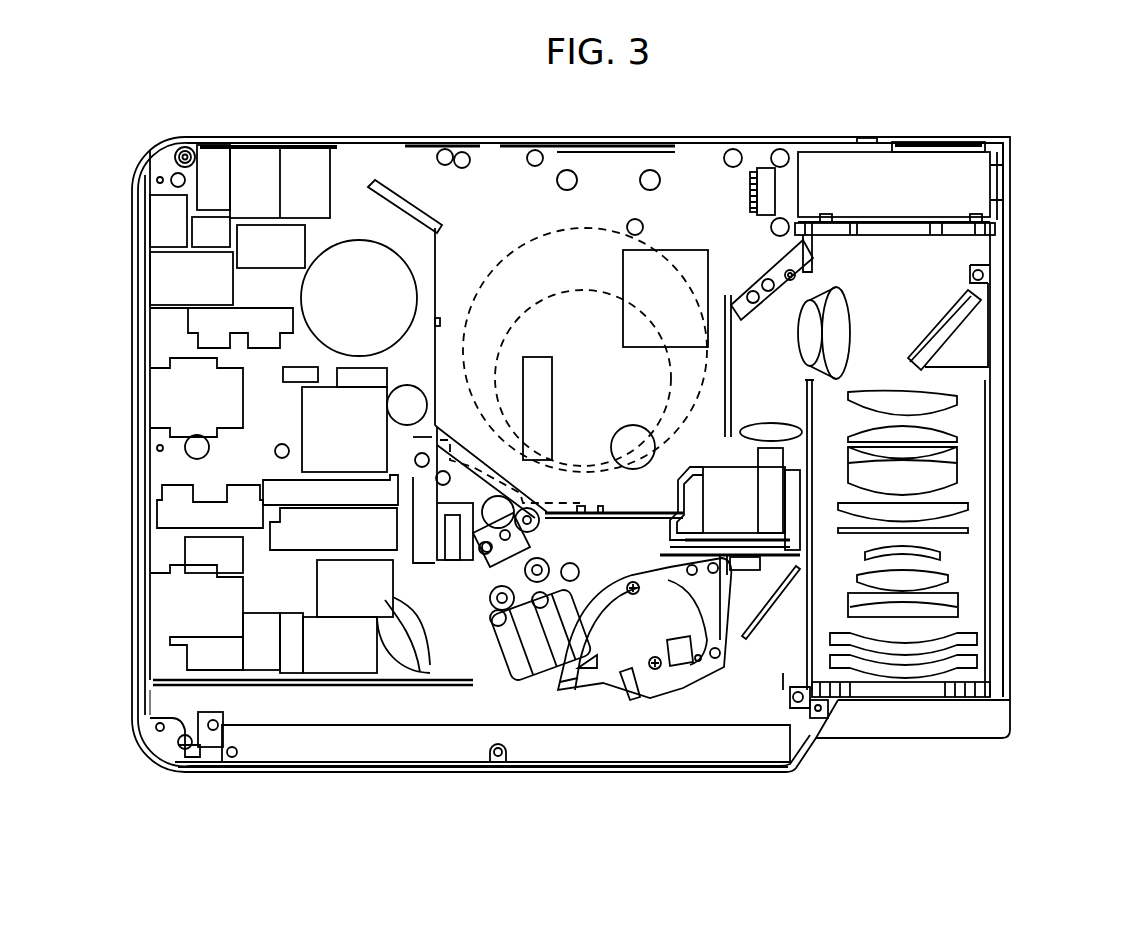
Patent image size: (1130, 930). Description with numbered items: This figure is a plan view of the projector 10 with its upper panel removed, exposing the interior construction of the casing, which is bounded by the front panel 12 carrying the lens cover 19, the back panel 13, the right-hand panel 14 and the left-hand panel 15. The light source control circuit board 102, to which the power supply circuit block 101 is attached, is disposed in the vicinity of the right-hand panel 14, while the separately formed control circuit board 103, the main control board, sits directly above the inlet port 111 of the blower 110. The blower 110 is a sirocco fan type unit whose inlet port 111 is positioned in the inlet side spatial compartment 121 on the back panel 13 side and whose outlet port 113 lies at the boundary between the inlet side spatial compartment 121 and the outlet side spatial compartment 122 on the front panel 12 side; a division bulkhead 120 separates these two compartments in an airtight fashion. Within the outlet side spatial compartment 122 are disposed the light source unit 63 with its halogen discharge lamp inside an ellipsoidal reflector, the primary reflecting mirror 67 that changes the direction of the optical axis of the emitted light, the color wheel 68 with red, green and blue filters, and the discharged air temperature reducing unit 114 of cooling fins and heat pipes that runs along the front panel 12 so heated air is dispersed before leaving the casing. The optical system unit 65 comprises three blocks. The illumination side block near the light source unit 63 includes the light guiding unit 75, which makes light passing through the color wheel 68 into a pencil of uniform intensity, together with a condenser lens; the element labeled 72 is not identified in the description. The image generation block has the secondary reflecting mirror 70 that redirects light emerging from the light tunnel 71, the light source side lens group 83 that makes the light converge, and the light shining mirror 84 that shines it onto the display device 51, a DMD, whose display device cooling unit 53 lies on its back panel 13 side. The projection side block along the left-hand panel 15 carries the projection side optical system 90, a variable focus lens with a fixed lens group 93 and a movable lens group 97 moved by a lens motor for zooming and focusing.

The projector 10 is at (1034, 124).
The front panel 12 is at (517, 764).
The back panel 13 is at (360, 143).
The right-hand panel 14 is at (136, 506).
The left-hand panel 15 is at (1012, 268).
The lens cover 19 is at (886, 738).
The display device 51 is at (905, 227).
The display device cooling unit 53 is at (827, 183).
The light source unit 63 is at (666, 698).
The optical system unit 65 is at (962, 252).
The primary reflecting mirror 67 is at (777, 588).
The color wheel 68 is at (735, 575).
The secondary reflecting mirror 70 is at (752, 318).
The light tunnel 71 is at (773, 460).
The light source 72 is at (770, 537).
The light guiding unit 75 is at (792, 517).
The light source side lens group 83 is at (857, 345).
The light shining mirror 84 is at (963, 307).
The projection side optical system 90 is at (960, 420).
The fixed lens group 93 is at (950, 457).
The movable lens group 97 is at (952, 584).
The power supply circuit block 101 is at (170, 283).
The light source control circuit board 102 is at (170, 545).
The control circuit board 103 is at (480, 190).
The blower 110 is at (545, 232).
The inlet port 111 is at (602, 288).
The outlet port 113 is at (613, 510).
The discharged air temperature reducing unit 114 is at (448, 750).
The division bulkhead 120 is at (271, 695).
The inlet side spatial compartment 121 is at (512, 185).
The outlet side spatial compartment 122 is at (334, 705).